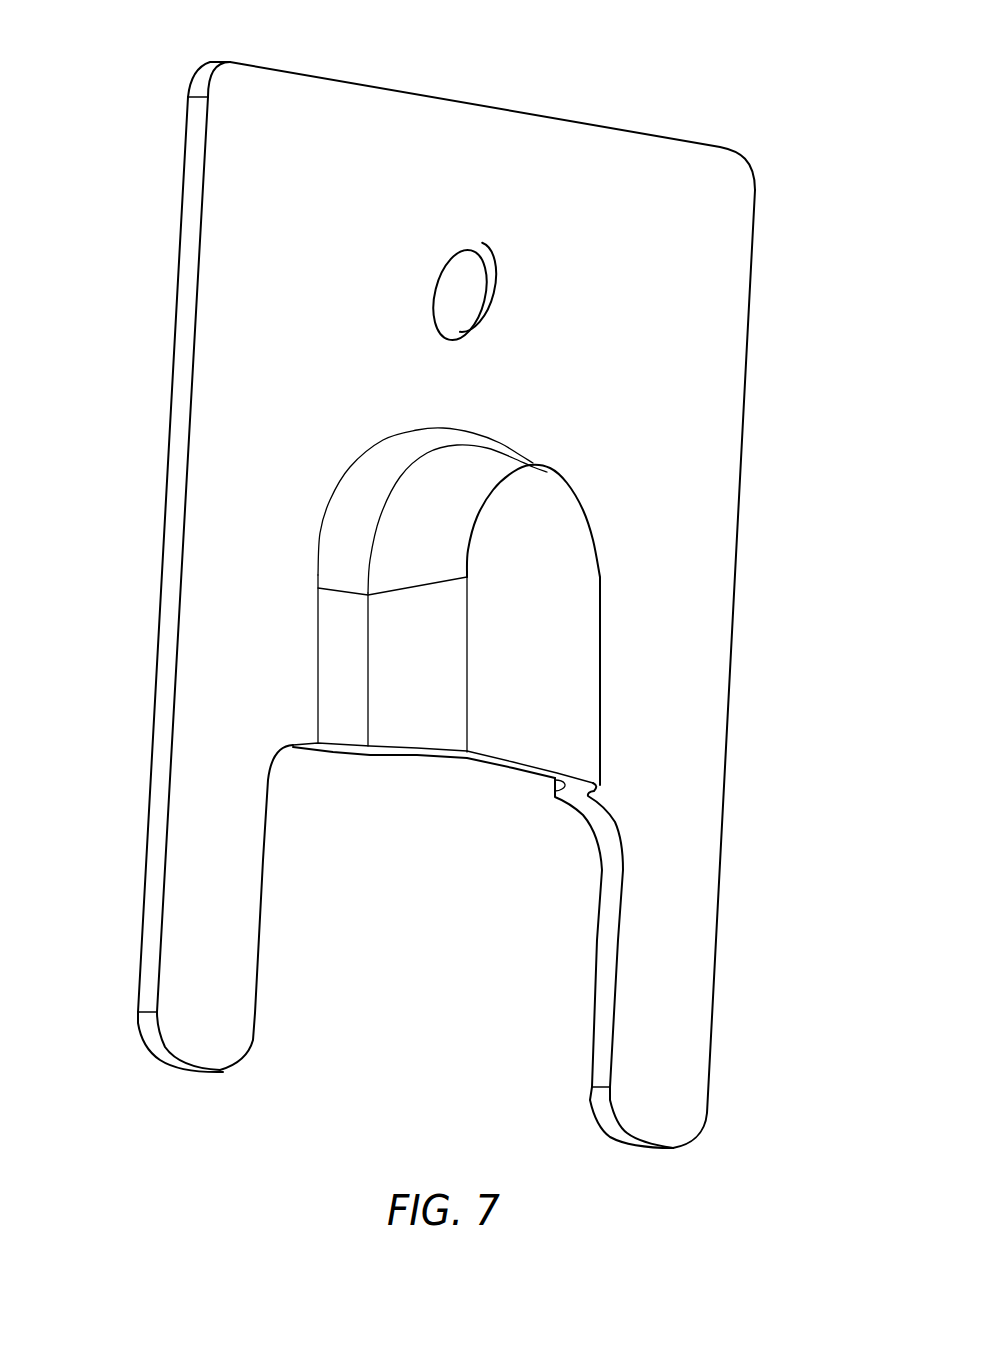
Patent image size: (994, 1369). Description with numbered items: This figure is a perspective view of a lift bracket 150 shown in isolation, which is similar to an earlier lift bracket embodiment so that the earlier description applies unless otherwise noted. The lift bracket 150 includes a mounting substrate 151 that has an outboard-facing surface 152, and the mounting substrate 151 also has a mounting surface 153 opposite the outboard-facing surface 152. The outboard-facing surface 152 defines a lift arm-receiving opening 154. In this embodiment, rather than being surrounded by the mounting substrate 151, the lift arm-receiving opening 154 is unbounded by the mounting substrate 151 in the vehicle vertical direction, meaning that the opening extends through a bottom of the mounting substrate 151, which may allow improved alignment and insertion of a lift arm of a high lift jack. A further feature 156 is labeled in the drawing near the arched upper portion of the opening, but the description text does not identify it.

The lift bracket 150 is at (718, 143).
The mounting substrate 151 is at (138, 642).
The outboard-facing surface 152 is at (694, 420).
The mounting surface 153 is at (146, 873).
The lift arm-receiving opening 154 is at (473, 952).
The arched slot 156 is at (568, 528).